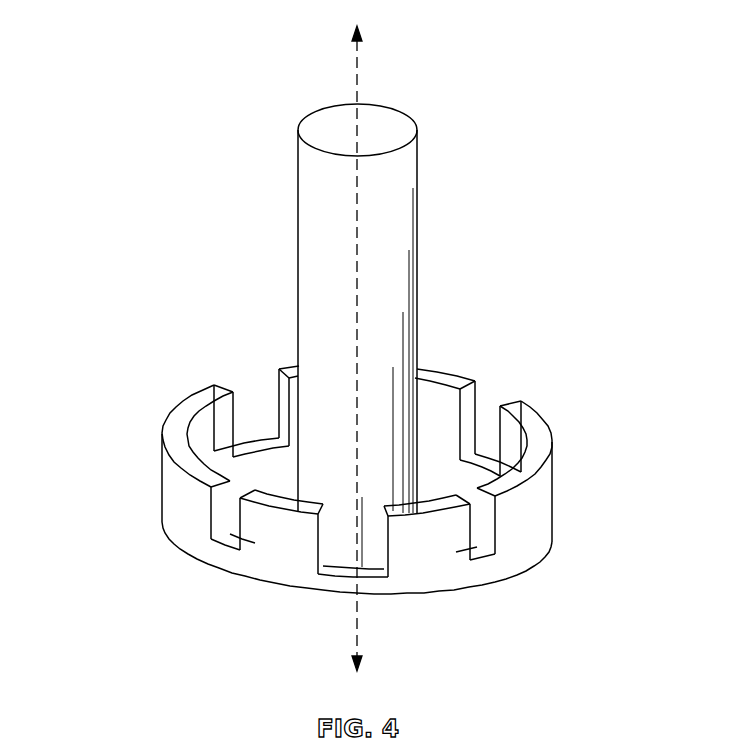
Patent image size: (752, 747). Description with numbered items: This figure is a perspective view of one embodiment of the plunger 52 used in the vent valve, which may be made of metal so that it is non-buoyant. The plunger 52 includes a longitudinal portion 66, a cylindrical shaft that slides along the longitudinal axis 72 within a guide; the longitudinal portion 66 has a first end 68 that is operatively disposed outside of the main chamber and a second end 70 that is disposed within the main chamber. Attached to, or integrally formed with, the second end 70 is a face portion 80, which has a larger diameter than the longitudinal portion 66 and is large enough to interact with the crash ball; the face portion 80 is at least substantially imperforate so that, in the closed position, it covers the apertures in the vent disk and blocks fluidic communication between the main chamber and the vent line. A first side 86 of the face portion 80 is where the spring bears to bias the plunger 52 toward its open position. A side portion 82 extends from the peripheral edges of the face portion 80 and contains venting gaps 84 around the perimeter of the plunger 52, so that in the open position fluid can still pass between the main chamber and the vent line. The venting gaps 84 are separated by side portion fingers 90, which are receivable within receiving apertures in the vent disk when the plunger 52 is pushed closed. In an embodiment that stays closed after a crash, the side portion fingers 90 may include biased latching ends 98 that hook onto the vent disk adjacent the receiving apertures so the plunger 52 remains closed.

The plunger 52 is at (226, 300).
The longitudinal portion 66 is at (408, 166).
The first end 68 is at (395, 127).
The second end 70 is at (420, 590).
The longitudinal axis 72 is at (352, 68).
The face portion 80 is at (233, 574).
The side portion 82 is at (173, 508).
The venting gaps 84 is at (265, 409).
The first side 86 is at (308, 503).
The side portion fingers 90 is at (195, 515).
The latching ends 98 is at (288, 368).